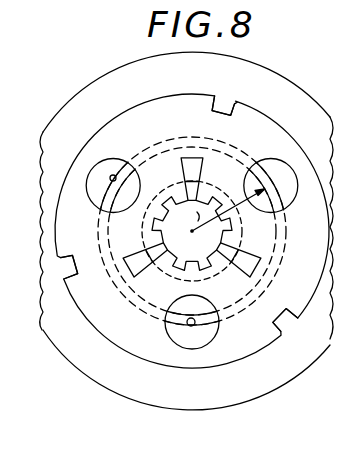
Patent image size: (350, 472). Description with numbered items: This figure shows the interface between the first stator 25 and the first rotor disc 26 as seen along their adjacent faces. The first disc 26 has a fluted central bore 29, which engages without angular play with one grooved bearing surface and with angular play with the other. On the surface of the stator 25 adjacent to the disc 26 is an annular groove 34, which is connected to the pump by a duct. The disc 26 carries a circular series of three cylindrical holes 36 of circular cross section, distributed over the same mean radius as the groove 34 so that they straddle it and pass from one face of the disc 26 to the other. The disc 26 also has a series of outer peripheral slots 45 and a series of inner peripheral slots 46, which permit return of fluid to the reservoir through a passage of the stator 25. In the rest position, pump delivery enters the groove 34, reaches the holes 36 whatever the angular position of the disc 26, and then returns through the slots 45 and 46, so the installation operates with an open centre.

The stator 25 is at (63, 102).
The first disc 26 is at (125, 110).
The fluted central bore 29 is at (164, 268).
The annular groove 34 is at (114, 175).
The cylindrical holes 36 is at (93, 170).
The outer peripheral slots 45 is at (211, 98).
The inner peripheral slots 46 is at (202, 157).